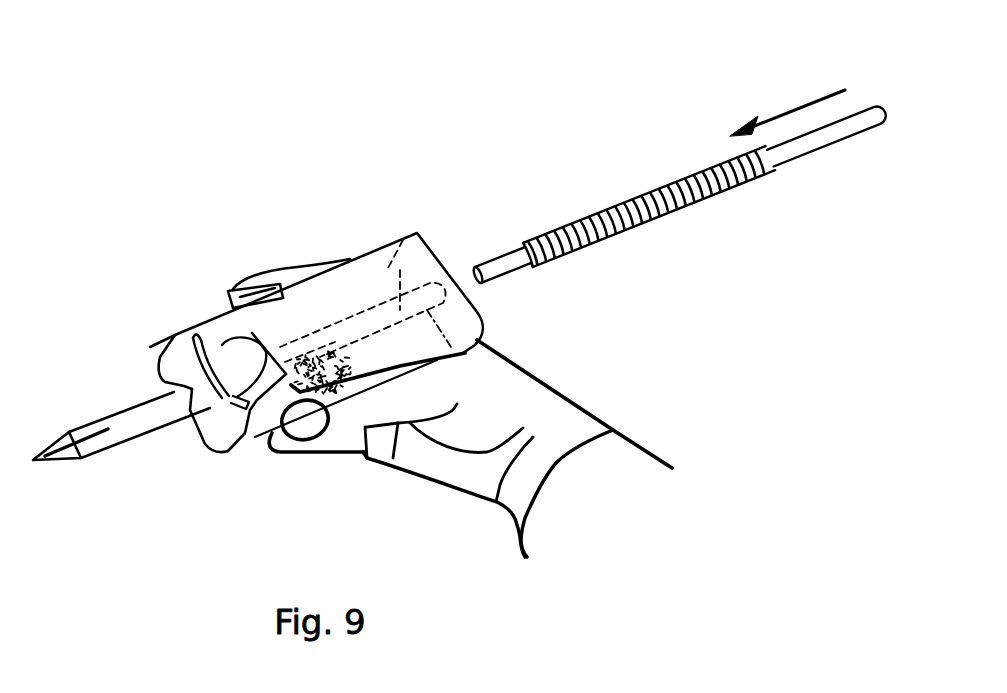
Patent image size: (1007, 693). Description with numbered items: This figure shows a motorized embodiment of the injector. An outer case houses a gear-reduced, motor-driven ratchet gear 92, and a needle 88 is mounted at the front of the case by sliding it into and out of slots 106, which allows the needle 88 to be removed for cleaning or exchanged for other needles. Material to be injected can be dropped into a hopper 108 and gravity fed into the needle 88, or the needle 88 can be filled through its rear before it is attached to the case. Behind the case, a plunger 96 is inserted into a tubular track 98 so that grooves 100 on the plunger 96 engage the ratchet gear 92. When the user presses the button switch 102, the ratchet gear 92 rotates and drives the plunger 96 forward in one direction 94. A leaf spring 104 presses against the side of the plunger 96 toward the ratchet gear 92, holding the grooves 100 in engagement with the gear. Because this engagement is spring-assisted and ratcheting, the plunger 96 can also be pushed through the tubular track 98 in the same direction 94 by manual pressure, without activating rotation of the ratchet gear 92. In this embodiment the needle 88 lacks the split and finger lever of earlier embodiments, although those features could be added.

The needle 88 is at (133, 423).
The slots 106 is at (187, 393).
The hopper 108 is at (238, 352).
The button switch 102 is at (252, 333).
The leaf spring 104 is at (325, 355).
The ratchet gear 92 is at (335, 362).
The tubular track 98 is at (410, 306).
The plunger 96 is at (497, 259).
The grooves 100 is at (577, 221).
The direction 94 is at (750, 133).